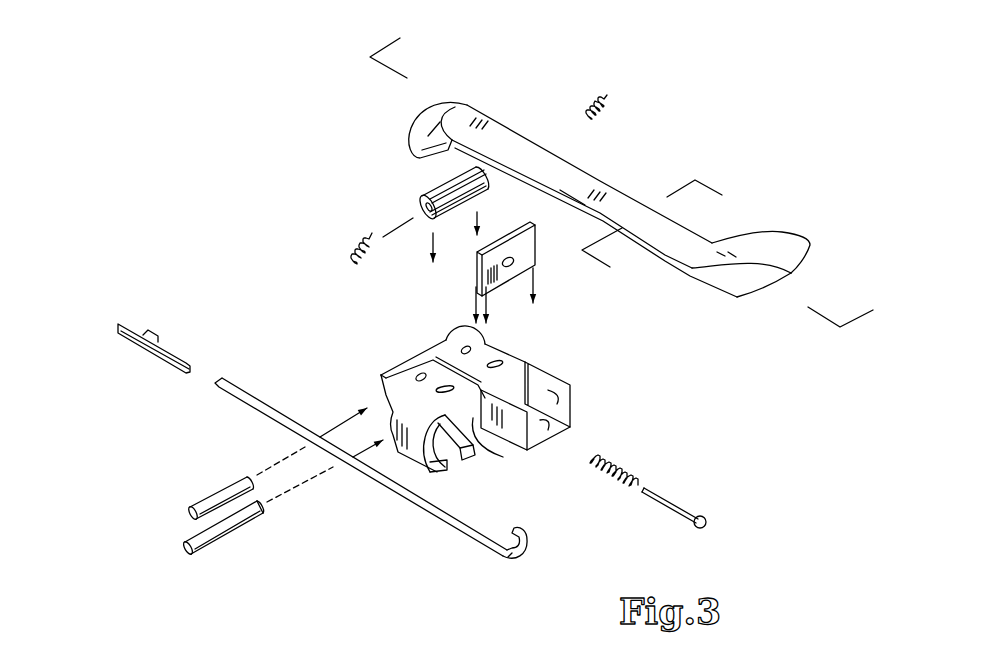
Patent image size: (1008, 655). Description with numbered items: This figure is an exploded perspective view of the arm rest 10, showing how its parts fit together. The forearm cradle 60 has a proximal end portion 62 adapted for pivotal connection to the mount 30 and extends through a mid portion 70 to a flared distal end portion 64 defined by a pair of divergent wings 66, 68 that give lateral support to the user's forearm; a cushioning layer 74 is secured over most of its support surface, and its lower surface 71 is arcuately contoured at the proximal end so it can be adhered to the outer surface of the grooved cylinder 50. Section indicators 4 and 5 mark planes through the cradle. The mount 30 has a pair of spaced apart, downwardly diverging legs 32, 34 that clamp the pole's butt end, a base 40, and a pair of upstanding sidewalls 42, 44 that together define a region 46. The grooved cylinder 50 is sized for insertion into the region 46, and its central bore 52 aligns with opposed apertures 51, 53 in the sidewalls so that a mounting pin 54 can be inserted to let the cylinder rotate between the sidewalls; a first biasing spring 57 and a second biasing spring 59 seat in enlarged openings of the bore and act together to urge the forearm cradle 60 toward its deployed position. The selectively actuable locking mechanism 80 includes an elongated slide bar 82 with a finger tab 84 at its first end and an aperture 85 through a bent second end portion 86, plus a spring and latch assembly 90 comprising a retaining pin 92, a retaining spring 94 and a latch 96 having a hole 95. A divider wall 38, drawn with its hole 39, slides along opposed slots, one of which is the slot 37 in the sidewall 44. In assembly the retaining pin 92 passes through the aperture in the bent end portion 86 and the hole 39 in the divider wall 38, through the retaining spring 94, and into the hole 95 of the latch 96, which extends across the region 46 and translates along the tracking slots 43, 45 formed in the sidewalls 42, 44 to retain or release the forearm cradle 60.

The arm rest 10 is at (243, 233).
The section line 4- 4 is at (624, 173).
The section line 5- 5 is at (666, 234).
The mount 30 is at (587, 365).
The leg 32 is at (443, 482).
The leg 34 is at (457, 455).
The slot 37 is at (528, 366).
The divider wall 38 is at (523, 243).
The plate hole 39 is at (513, 261).
The base 40 is at (572, 408).
The sidewall 42 is at (527, 447).
The tracking slot 43 is at (452, 390).
The sidewall 44 is at (560, 398).
The tracking slot 45 is at (483, 360).
The region 46 is at (455, 356).
The grooved cylinder 50 is at (440, 182).
The aperture 51 is at (400, 377).
The central bore 52 is at (427, 207).
The aperture 53 is at (463, 336).
The mounting pin 54 is at (222, 495).
The first biasing spring 57 is at (360, 232).
The second biasing spring 59 is at (590, 102).
The forearm cradle 60 is at (688, 163).
The proximal end portion 62 is at (400, 127).
The flared distal end portion 64 is at (815, 243).
The wing 66 is at (763, 232).
The wing 68 is at (740, 282).
The mid portion 70 is at (613, 172).
The lower surface 71 is at (410, 152).
The cushioning layer 74 is at (577, 179).
The locking mechanism 80 is at (337, 343).
The slide bar 82 is at (260, 405).
The finger tab 84 is at (150, 328).
The aperture 85 is at (532, 540).
The bent second end portion 86 is at (520, 558).
The spring and latch assembly 90 is at (640, 452).
The retaining pin 92 is at (682, 508).
The retaining spring 94 is at (633, 473).
The hole 95 is at (223, 525).
The latch 96 is at (250, 518).